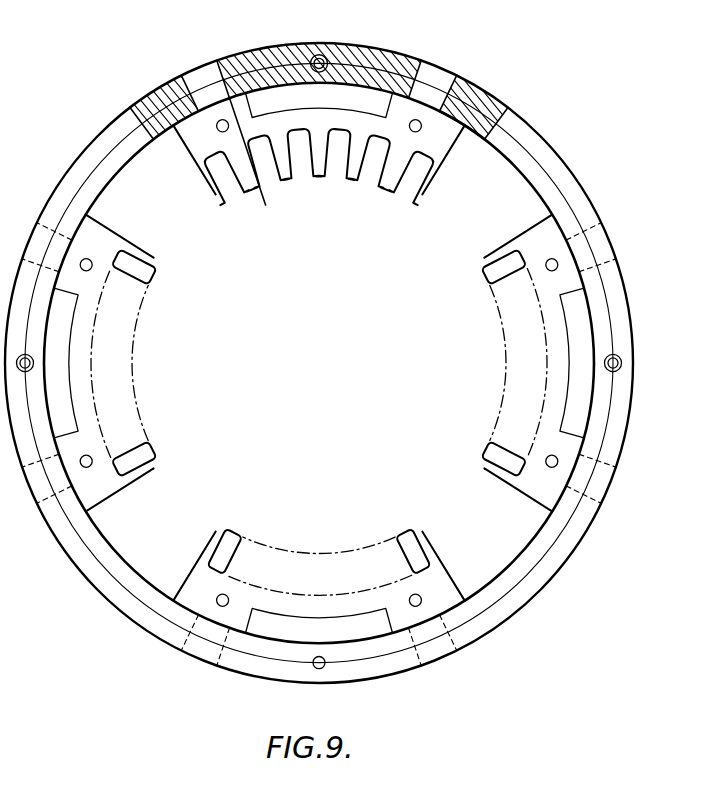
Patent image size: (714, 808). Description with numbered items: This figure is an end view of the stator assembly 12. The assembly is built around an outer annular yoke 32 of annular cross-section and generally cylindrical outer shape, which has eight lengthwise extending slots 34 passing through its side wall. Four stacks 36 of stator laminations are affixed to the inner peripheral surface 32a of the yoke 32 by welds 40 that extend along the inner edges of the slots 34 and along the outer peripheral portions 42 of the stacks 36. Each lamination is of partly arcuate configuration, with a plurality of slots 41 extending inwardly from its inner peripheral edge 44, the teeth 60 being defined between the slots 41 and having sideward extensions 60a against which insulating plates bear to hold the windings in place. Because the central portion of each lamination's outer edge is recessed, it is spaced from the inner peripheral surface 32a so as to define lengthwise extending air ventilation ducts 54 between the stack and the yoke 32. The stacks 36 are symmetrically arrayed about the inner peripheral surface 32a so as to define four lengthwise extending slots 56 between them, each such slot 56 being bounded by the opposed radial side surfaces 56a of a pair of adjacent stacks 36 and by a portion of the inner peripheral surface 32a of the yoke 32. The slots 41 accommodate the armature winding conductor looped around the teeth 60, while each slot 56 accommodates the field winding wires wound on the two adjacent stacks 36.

The stator assembly 12 is at (466, 64).
The outer annular yoke 32 is at (386, 96).
The inner peripheral surface 32a is at (280, 72).
The lengthwise extending slots 34 is at (205, 76).
The stacks of stator laminations 36 is at (174, 155).
The welds 40 is at (462, 102).
The slots 41 is at (366, 175).
The outer peripheral portions 42 is at (175, 108).
The inner peripheral edge 44 is at (417, 203).
The air ventilation ducts 54 is at (338, 93).
The lengthwise extending slots 56 is at (183, 197).
The radial side surfaces 56a is at (512, 237).
The teeth 60 is at (306, 165).
The sideward extensions 60a is at (222, 200).